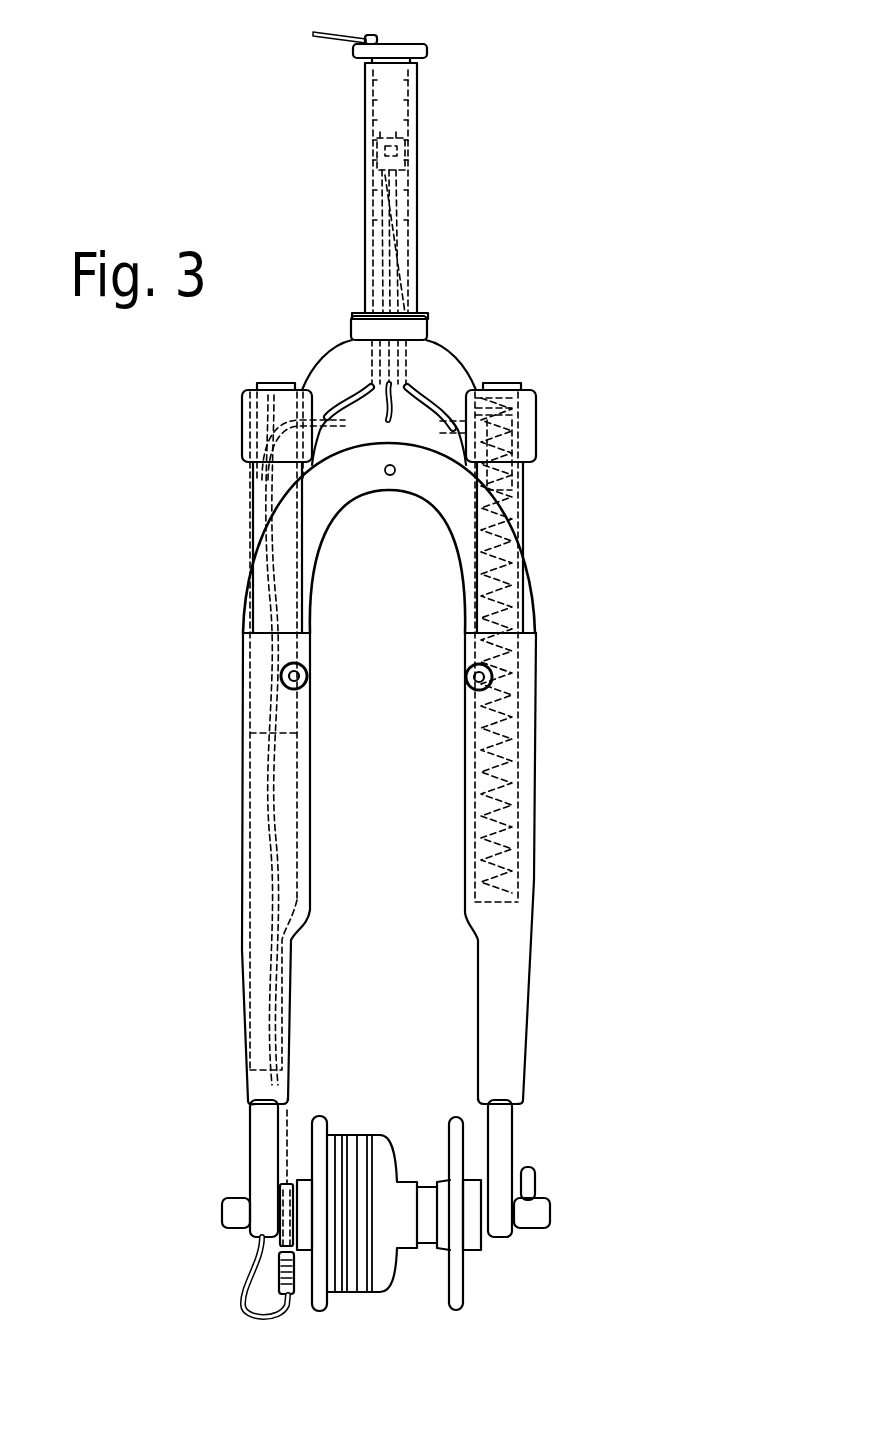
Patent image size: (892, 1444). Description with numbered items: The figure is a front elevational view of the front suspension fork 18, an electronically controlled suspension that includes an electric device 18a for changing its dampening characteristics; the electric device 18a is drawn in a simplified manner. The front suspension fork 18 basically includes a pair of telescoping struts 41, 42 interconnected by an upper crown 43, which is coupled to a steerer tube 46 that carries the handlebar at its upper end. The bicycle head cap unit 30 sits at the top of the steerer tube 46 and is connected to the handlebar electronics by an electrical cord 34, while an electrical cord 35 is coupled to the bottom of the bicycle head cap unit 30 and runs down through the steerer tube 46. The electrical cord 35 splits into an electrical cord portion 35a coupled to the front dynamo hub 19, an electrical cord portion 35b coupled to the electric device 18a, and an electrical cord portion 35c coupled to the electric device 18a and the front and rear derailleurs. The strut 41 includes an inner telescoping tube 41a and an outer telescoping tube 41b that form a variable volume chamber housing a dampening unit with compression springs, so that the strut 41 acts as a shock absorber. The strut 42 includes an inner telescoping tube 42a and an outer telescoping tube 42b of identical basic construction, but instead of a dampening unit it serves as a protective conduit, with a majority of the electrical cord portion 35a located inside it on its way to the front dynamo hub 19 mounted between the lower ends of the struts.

The front suspension fork 18 is at (467, 318).
The electric device 18a is at (536, 432).
The front dynamo hub 19 is at (378, 1126).
The bicycle head cap unit 30 is at (438, 49).
The electrical cord 34 is at (313, 35).
The electrical cord 35 is at (400, 226).
The electrical cord portion 35a is at (328, 405).
The electrical cord portion 35b is at (450, 405).
The electrical cord portion 35c is at (393, 405).
The strut 41 is at (548, 682).
The inner telescoping tube 41a is at (528, 497).
The outer telescoping tube 41b is at (531, 810).
The strut 42 is at (232, 702).
The inner telescoping tube 42a is at (243, 515).
The outer telescoping tube 42b is at (242, 840).
The upper crown 43 is at (338, 320).
The steerer tube 46 is at (417, 240).